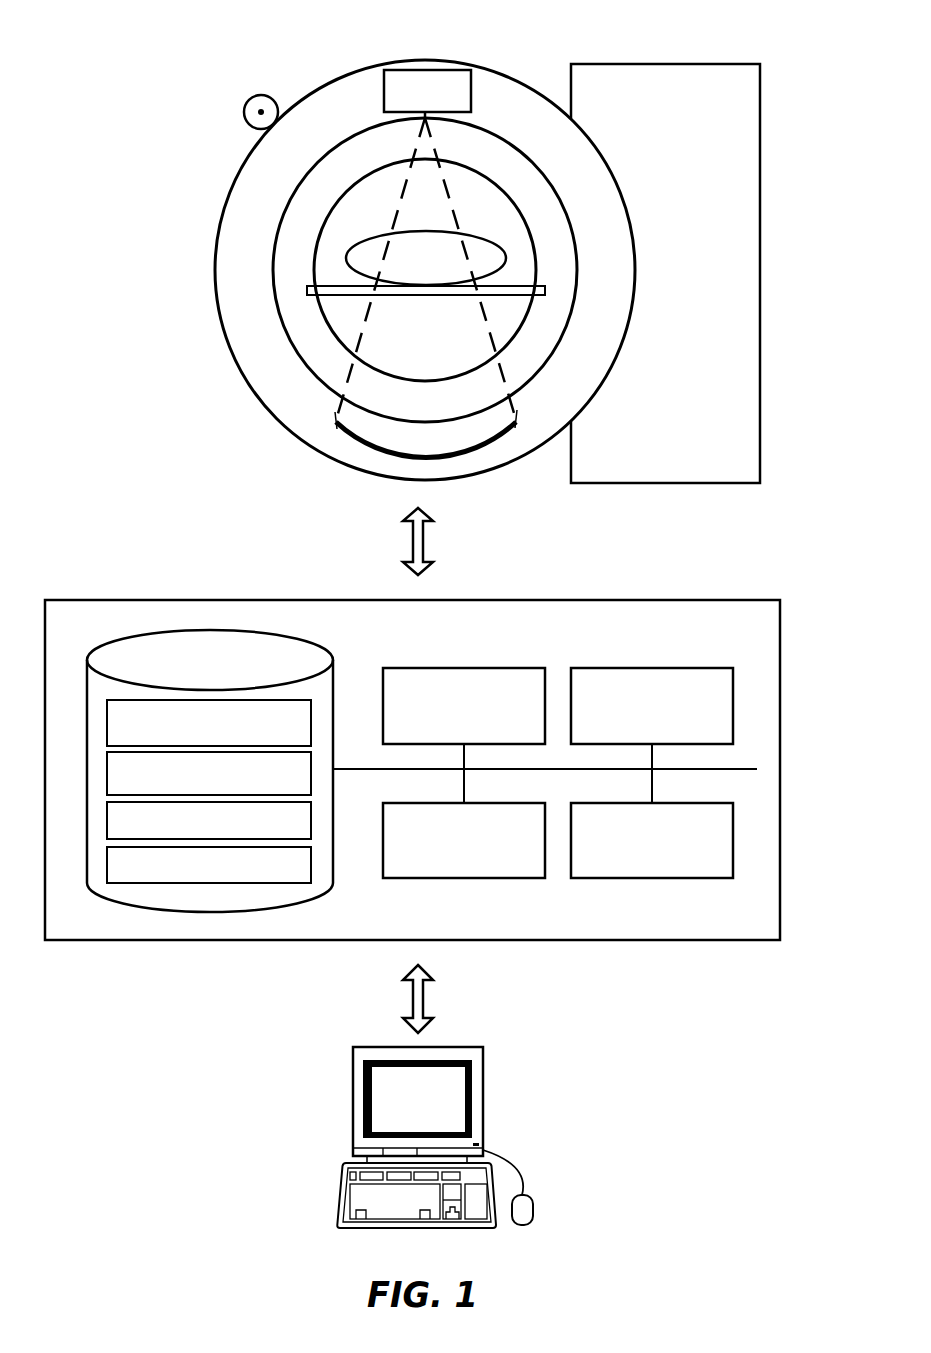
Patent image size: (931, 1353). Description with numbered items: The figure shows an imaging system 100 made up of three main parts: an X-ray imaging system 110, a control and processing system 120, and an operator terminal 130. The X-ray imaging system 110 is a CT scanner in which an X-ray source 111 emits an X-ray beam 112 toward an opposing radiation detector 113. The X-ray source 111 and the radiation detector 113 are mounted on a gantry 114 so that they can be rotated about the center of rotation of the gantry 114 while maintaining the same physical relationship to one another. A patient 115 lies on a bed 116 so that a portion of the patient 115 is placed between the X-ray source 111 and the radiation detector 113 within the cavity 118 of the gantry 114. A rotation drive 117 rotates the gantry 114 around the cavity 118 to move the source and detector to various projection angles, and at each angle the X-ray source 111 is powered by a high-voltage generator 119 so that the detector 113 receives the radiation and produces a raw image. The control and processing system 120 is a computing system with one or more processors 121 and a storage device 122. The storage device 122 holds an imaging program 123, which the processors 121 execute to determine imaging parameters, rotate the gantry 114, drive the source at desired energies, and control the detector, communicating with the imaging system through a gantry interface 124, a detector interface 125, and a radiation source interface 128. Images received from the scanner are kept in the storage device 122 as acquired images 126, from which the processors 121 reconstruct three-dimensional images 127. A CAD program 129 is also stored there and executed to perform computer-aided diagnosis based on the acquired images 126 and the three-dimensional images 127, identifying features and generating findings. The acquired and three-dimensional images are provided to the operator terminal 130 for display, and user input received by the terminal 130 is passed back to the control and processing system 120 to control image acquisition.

The system 100 is at (168, 24).
The X-ray imaging system 110 is at (340, 33).
The X-ray source 111 is at (383, 107).
The X-ray beam 112 is at (436, 153).
The radiation detector 113 is at (398, 457).
The gantry 114 is at (493, 72).
The patient 115 is at (473, 233).
The bed 116 is at (413, 297).
The rotation drive 117 is at (245, 107).
The cavity 118 is at (332, 242).
The high-voltage generator 119 is at (760, 104).
The control and processing system 120 is at (600, 600).
The processors 121 is at (498, 803).
The storage device 122 is at (305, 650).
The imaging program 123 is at (107, 727).
The gantry interface 124 is at (498, 668).
The detector interface 125 is at (692, 803).
The acquired images 126 is at (107, 820).
The three-dimensional images 127 is at (107, 865).
The radiation source interface 128 is at (692, 668).
The CAD program 129 is at (107, 775).
The operator terminal 130 is at (530, 1108).